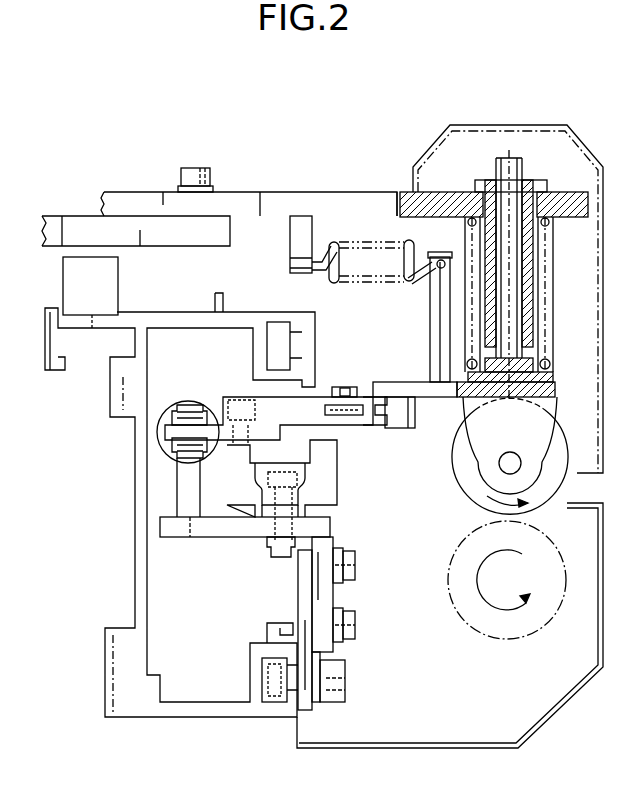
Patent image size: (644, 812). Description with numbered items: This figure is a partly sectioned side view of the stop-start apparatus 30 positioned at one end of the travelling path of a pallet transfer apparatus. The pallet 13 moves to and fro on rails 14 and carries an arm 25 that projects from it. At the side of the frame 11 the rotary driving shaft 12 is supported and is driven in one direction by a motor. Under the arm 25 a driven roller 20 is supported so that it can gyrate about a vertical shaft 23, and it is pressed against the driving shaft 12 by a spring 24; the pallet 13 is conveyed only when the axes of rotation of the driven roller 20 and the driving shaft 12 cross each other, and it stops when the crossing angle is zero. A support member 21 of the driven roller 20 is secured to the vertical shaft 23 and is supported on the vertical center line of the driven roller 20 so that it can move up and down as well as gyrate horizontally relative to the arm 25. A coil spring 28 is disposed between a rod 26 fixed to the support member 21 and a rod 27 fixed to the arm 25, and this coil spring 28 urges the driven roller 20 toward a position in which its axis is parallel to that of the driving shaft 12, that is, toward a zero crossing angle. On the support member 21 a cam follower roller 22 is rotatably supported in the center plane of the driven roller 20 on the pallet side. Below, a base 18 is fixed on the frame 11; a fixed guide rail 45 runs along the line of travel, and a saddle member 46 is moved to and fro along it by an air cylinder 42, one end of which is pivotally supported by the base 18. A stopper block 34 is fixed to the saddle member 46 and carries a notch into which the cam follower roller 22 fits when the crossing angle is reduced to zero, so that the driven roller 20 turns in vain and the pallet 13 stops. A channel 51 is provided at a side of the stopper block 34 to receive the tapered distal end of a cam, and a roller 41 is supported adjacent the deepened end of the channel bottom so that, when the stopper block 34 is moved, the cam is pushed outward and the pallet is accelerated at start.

The frame 11 is at (134, 489).
The rotary driving shaft 12 is at (555, 562).
The pallet 13 is at (76, 212).
The rails 14 is at (70, 278).
The base 18 is at (240, 538).
The driven roller 20 is at (553, 452).
The support member 21 is at (552, 398).
The cam follower roller 22 is at (401, 428).
The vertical shaft 23 is at (527, 172).
The spring 24 is at (548, 226).
The arm 25 is at (380, 192).
The rod 26 is at (432, 322).
The rod 27 is at (290, 248).
The coil spring 28 is at (338, 285).
The stop-start apparatus 30 is at (395, 496).
The stopper block 34 is at (318, 397).
The roller 41 is at (360, 422).
The air cylinder 42 is at (172, 401).
The fixed guide rail 45 is at (297, 498).
The saddle member 46 is at (325, 470).
The channel 51 is at (320, 414).